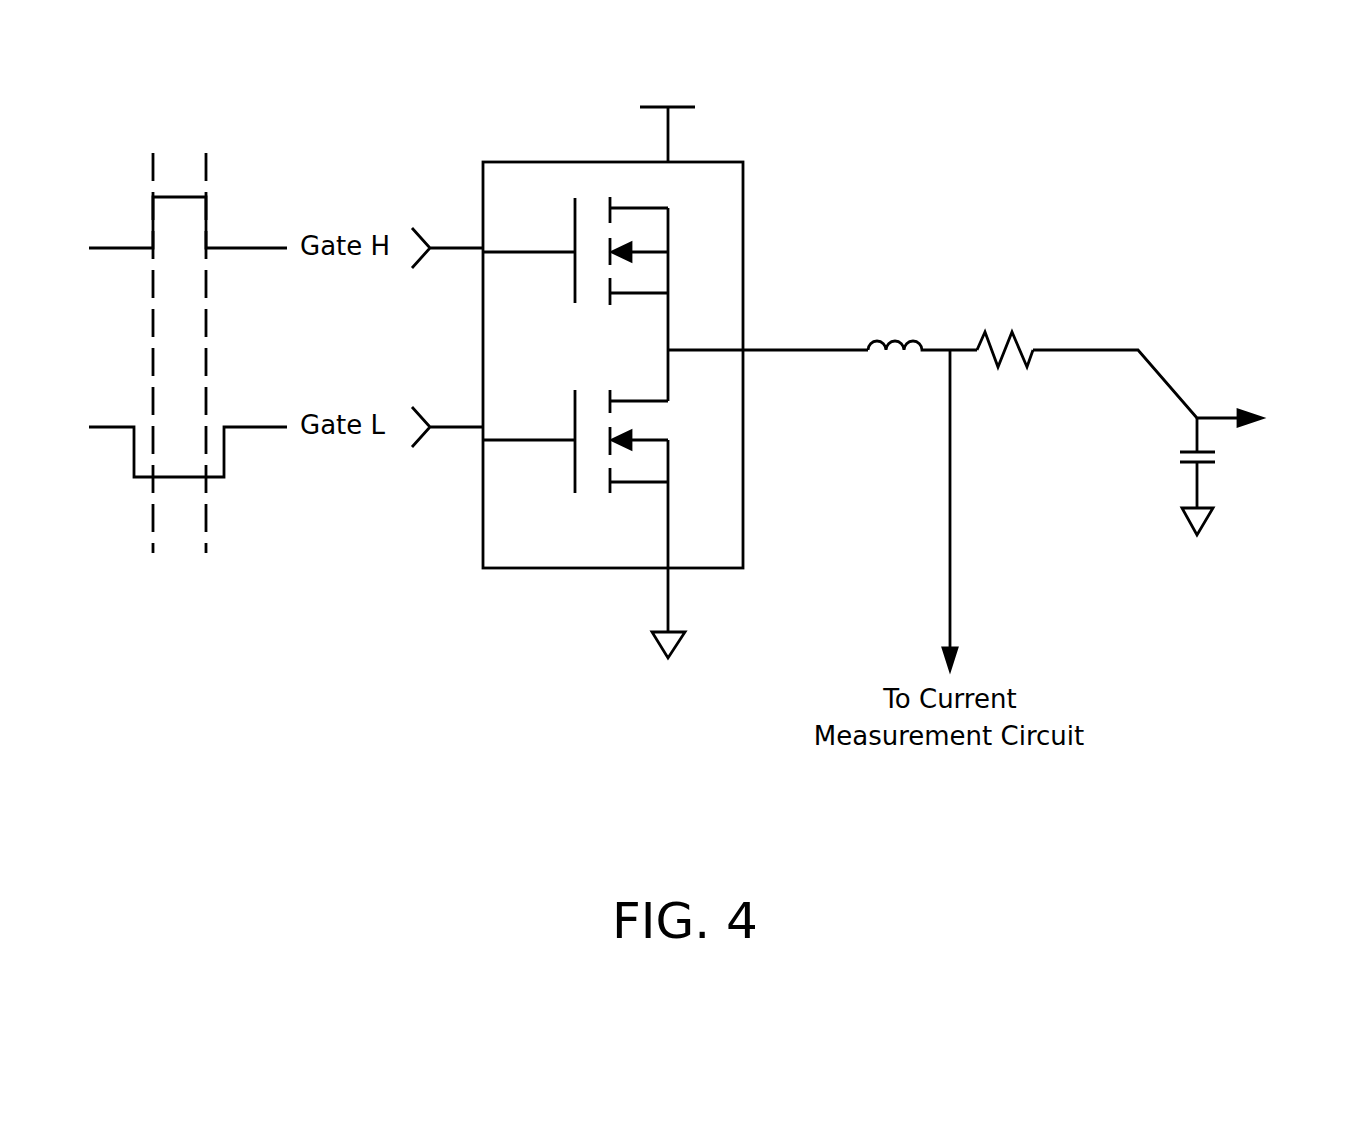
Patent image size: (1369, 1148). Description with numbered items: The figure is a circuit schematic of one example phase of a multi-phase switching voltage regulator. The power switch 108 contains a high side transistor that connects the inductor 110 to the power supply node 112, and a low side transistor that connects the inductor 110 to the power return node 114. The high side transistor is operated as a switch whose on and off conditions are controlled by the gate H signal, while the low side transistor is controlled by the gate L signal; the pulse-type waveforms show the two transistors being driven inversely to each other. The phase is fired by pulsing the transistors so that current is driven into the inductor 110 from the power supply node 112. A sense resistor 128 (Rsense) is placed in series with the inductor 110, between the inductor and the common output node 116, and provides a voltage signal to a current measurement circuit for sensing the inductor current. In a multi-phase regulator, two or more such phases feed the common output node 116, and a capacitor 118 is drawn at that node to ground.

The power switch 108 is at (528, 568).
The inductor 110 is at (868, 346).
The power supply node 112 is at (668, 155).
The power return node 114 is at (668, 594).
The common output node 116 is at (1107, 350).
The output capacitor 118 is at (1182, 462).
The sense resistor 128 is at (998, 367).